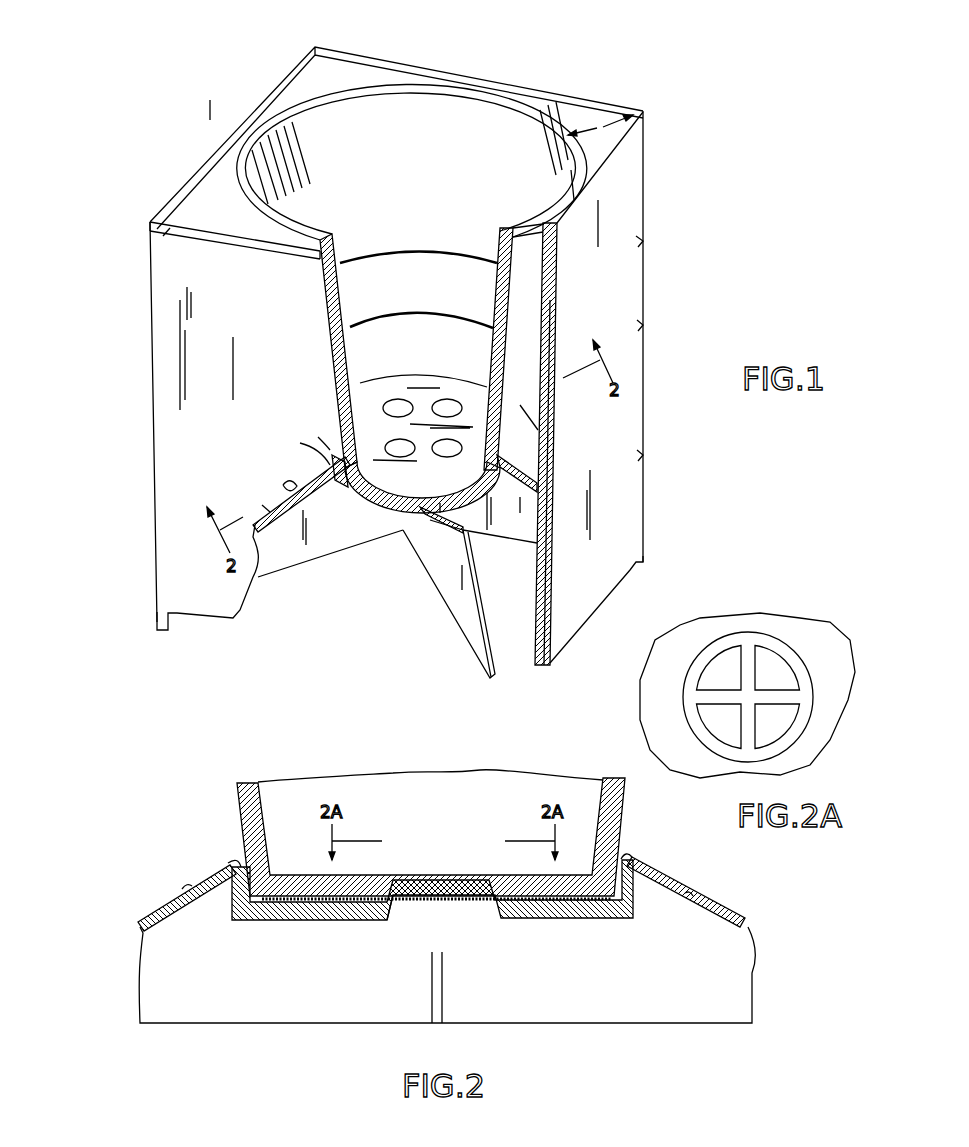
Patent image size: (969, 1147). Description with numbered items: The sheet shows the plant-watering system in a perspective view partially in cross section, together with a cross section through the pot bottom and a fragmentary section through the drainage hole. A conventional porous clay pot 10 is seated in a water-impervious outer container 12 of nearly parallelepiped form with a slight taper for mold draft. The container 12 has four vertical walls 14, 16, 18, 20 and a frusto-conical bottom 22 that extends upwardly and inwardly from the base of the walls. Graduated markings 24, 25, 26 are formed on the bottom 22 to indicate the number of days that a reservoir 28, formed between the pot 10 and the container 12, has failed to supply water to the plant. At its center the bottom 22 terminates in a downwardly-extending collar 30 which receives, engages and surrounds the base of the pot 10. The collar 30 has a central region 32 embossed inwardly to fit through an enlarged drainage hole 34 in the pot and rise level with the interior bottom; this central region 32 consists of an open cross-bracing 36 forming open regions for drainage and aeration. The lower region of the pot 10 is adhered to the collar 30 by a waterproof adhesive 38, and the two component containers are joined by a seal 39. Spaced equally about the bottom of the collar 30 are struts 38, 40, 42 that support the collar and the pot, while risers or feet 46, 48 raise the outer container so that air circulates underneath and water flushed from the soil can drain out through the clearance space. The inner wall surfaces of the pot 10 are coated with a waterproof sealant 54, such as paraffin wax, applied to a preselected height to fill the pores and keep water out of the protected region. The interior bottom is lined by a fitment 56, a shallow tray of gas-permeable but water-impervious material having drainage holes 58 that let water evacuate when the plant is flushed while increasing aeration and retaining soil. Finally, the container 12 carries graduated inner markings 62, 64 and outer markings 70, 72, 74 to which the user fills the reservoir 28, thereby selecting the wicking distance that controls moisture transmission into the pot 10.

In FIG. 1, the porous clay pot 10 is at (535, 118).
In FIG. 2, the porous clay pot 10 is at (245, 783).
In FIG. 1, the water-impervious container 12 is at (405, 60).
In FIG. 1, the vertical wall 14 is at (636, 290).
In FIG. 1, the vertical wall 16 is at (518, 82).
In FIG. 1, the vertical wall 18 is at (210, 167).
In FIG. 1, the vertical wall 20 is at (220, 243).
In FIG. 1, the bottom 22 is at (317, 487).
In FIG. 2, the bottom 22 is at (150, 913).
In FIG. 1, the graduated marking 24 is at (327, 450).
In FIG. 1, the graduated marking 25 is at (287, 483).
In FIG. 1, the graduated marking 26 is at (255, 517).
In FIG. 1, the reservoir 28 is at (603, 130).
In FIG. 1, the collar 30 is at (335, 485).
In FIG. 2, the collar 30 is at (297, 920).
In FIG. 2A, the central region 32 is at (787, 697).
In FIG. 2, the central region 32 is at (457, 873).
In FIG. 2A, the drainage hole 34 is at (735, 632).
In FIG. 2, the drainage hole 34 is at (387, 897).
In FIG. 2A, the open cross-bracing 36 is at (781, 690).
In FIG. 1, the strut 38 is at (333, 487).
In FIG. 2, the strut 38 is at (163, 1002).
In FIG. 1, the seal 39 is at (323, 438).
In FIG. 2, the seal 39 is at (240, 863).
In FIG. 1, the strut 40 is at (468, 627).
In FIG. 2, the strut 40 is at (445, 987).
In FIG. 1, the strut 42 is at (513, 547).
In FIG. 2, the strut 42 is at (733, 980).
In FIG. 1, the riser or foot 46 is at (158, 628).
In FIG. 1, the riser or foot 48 is at (643, 560).
In FIG. 1, the waterproof sealant 54 is at (368, 330).
In FIG. 2, the waterproof sealant 54 is at (267, 813).
In FIG. 1, the fitment 56 is at (365, 420).
In FIG. 1, the drainage holes 58 is at (444, 405).
In FIG. 1, the inner marking 62 is at (553, 305).
In FIG. 1, the inner marking 64 is at (553, 405).
In FIG. 1, the outer marking 70 is at (643, 240).
In FIG. 1, the outer marking 72 is at (643, 325).
In FIG. 1, the outer marking 74 is at (643, 455).